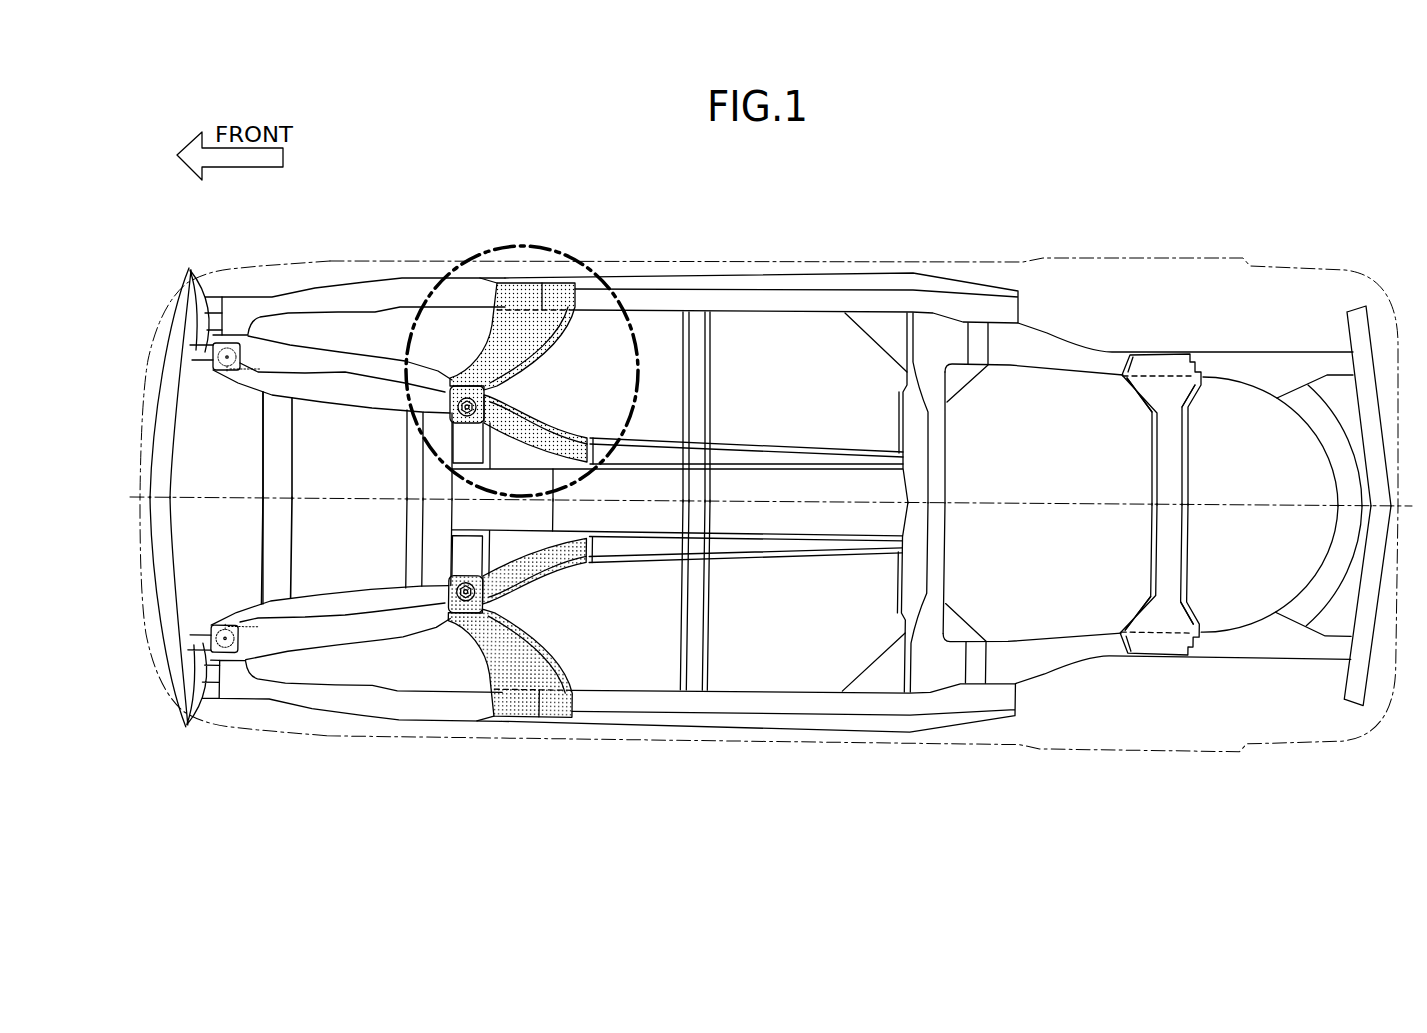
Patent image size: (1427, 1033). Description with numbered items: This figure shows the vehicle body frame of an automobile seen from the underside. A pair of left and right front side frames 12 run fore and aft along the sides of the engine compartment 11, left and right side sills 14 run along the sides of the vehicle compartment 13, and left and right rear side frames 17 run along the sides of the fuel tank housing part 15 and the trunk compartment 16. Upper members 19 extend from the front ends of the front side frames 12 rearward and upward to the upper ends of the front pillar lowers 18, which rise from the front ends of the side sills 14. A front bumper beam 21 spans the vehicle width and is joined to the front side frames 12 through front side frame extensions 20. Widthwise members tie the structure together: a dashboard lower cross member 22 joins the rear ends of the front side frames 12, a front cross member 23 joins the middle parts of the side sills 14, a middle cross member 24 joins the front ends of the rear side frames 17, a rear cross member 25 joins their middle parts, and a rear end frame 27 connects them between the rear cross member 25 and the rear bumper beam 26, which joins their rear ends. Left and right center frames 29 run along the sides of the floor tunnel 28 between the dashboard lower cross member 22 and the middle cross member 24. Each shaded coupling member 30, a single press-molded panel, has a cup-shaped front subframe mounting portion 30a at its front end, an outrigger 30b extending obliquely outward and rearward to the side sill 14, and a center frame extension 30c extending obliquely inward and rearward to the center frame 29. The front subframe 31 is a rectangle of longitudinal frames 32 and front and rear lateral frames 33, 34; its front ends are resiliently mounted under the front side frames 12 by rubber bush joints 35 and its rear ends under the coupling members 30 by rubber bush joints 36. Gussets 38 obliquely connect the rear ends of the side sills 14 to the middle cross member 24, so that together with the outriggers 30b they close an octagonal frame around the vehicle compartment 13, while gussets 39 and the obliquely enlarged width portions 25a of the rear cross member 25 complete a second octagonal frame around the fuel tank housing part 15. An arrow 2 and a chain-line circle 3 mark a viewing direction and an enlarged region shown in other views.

The section line II 2 is at (487, 172).
The enlarged portion III 3 is at (570, 250).
The engine compartment 11 is at (316, 511).
The front side frame 12 is at (362, 356).
The vehicle compartment 13 is at (643, 427).
The side sill 14 is at (740, 283).
The fuel tank housing part 15 is at (1034, 484).
The trunk compartment 16 is at (1227, 482).
The rear side frame 17 is at (1050, 347).
The front pillar lower 18 is at (485, 282).
The upper member 19 is at (377, 287).
The front side frame extension 20 is at (189, 268).
The front bumper beam 21 is at (163, 595).
The dashboard lower cross member 22 is at (452, 512).
The front cross member 23 is at (697, 359).
The middle cross member 24 is at (939, 450).
The rear cross member 25 is at (1152, 520).
The enlarged width portion 25a is at (1150, 393).
The rear bumper beam 26 is at (1373, 396).
The rear end frame 27 is at (1340, 540).
The floor tunnel 28 is at (833, 477).
The center frame 29 is at (757, 455).
The coupling member 30 is at (516, 394).
The front subframe mounting portion 30a is at (450, 437).
The outrigger 30b is at (533, 327).
The center frame extension 30c is at (540, 437).
The front subframe 31 is at (267, 507).
The longitudinal frame 32 is at (343, 403).
The front lateral frame 33 is at (266, 472).
The rear lateral frame 34 is at (417, 480).
The rubber bush joint 35 is at (224, 378).
The rubber bush joint 36 is at (458, 380).
The gusset 38 is at (880, 340).
The gusset 39 is at (960, 387).